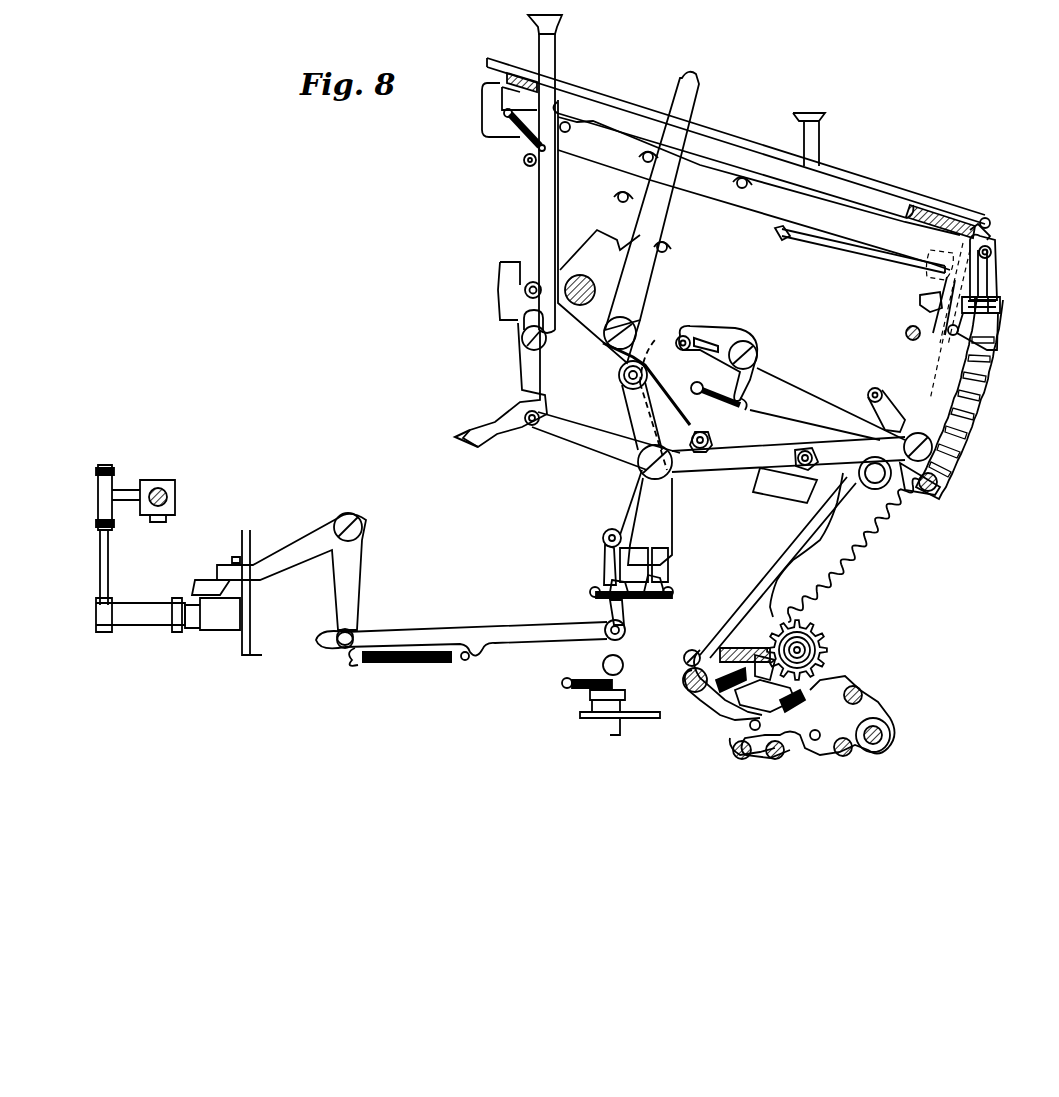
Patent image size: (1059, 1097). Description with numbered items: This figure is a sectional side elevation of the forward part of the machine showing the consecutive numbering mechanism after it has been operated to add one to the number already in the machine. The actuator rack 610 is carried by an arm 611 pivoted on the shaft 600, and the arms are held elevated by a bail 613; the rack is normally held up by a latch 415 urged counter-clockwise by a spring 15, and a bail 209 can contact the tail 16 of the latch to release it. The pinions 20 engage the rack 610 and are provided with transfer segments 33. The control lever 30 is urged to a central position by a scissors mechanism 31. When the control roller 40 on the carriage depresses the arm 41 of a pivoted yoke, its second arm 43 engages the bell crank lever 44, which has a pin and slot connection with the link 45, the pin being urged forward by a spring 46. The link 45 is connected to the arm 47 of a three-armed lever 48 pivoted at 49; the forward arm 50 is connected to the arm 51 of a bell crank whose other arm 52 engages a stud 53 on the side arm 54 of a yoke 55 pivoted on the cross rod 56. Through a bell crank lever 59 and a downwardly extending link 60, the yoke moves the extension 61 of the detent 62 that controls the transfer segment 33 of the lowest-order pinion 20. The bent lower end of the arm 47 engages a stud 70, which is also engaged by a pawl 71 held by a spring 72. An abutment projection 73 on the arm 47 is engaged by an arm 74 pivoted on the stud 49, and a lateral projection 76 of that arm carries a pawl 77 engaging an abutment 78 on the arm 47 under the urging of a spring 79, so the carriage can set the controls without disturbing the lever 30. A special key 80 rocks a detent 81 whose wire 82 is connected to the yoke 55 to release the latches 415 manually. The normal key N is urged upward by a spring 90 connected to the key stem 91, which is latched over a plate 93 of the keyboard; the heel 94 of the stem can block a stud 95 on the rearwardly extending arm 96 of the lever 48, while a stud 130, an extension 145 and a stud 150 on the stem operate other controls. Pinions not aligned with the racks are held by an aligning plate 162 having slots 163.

The normal key N is at (563, 27).
The spring 15 is at (968, 220).
The tails of the latches 16 is at (915, 325).
The pinions 20 is at (818, 636).
The control lever 30 is at (700, 97).
The scissors mechanism 31 is at (712, 332).
The transfer segments 33 is at (823, 690).
The control roller 40 is at (108, 467).
The arm 41 is at (110, 550).
The second arm 43 is at (179, 560).
The bell crank lever 44 is at (258, 575).
The link 45 is at (468, 628).
The spring 46 is at (388, 667).
The arm 47 is at (612, 607).
The three-armed lever 48 is at (675, 468).
The pivot stud 49 is at (645, 472).
The forward arm 50 is at (770, 455).
The arm of bell crank lever 51 is at (835, 458).
The arm of bell crank lever 52 is at (978, 400).
The stud 53 is at (948, 335).
The side arm 54 is at (997, 278).
The yoke 55 is at (1002, 304).
The cross rod 56 is at (993, 252).
The bell crank lever 59 is at (905, 400).
The link 60 is at (762, 608).
The extension 61 is at (688, 712).
The detent 62 is at (774, 690).
The stud 70 is at (592, 706).
The pawl 71 is at (626, 692).
The spring 72 is at (596, 680).
The abutment projection 73 is at (660, 574).
The arm 74 is at (672, 540).
The lateral projection 76 is at (635, 532).
The pawl 77 is at (604, 554).
The abutment 78 is at (612, 568).
The spring 79 is at (636, 598).
The special key 80 is at (820, 137).
The detent 81 is at (778, 234).
The wire 82 is at (880, 262).
The spring 90 is at (522, 138).
The key stem 91 is at (539, 216).
The plate 93 is at (558, 103).
The heel 94 is at (530, 406).
The stud 95 is at (528, 425).
The rearwardly extending arm 96 is at (582, 440).
The stud 130 is at (532, 282).
The extension 145 is at (468, 428).
The stud 150 is at (527, 166).
The aligning plate 162 is at (733, 652).
The slots 163 is at (748, 668).
The bail 209 is at (907, 336).
The latch 415 is at (990, 230).
The shaft 600 is at (584, 280).
The actuator rack 610 is at (872, 545).
The arms 611 is at (790, 396).
The bail 613 is at (800, 493).